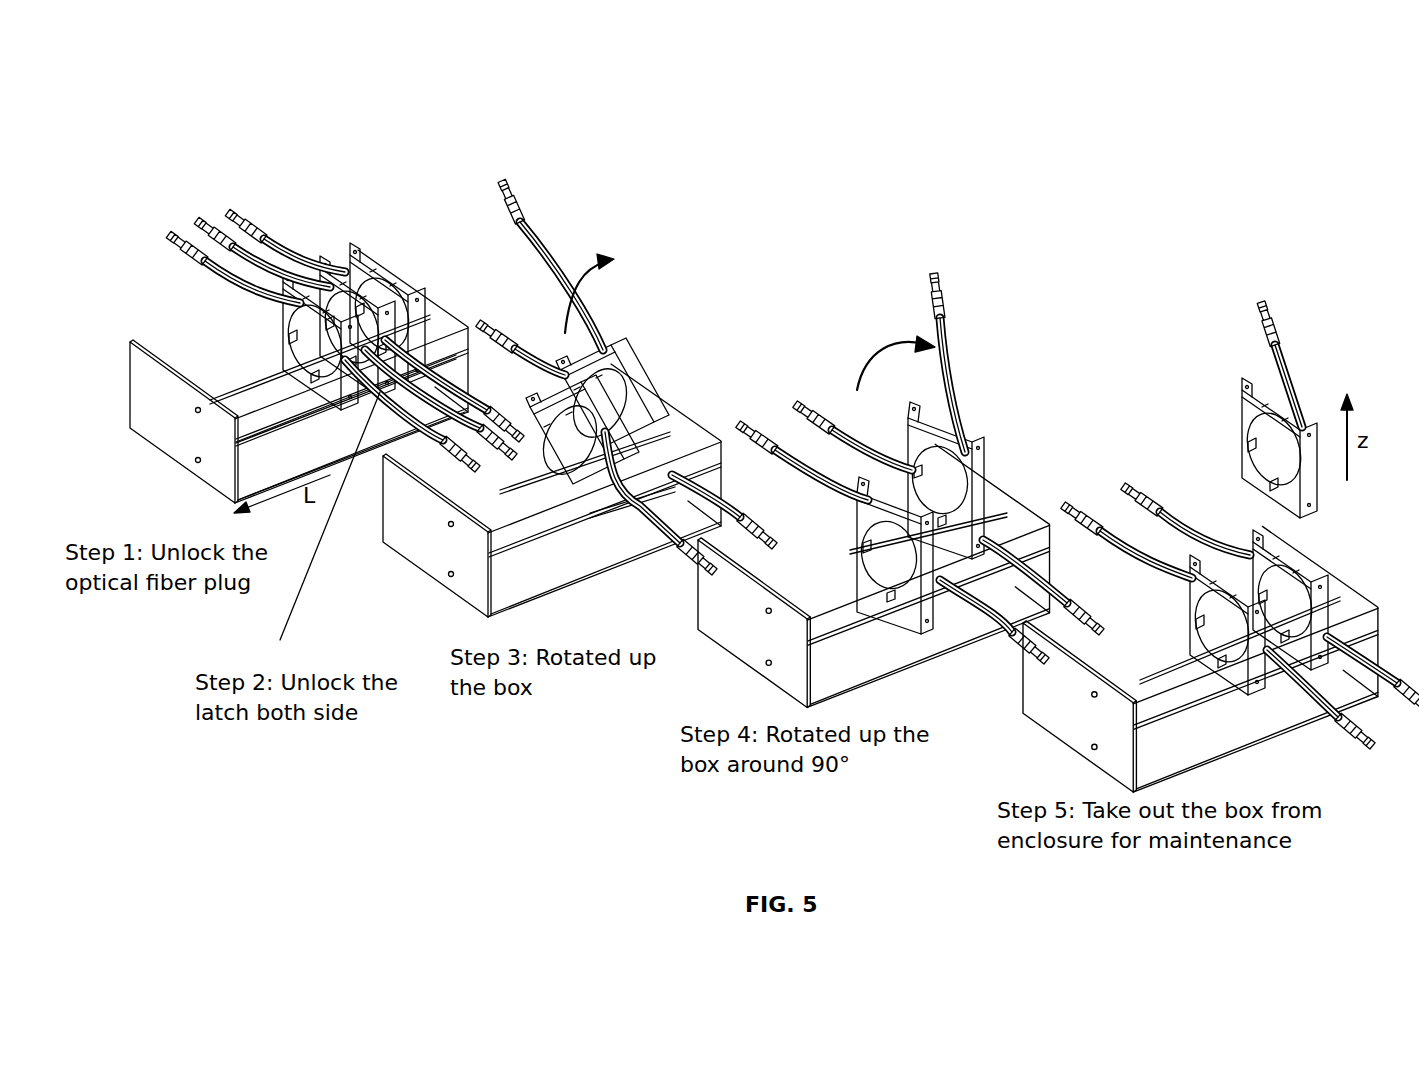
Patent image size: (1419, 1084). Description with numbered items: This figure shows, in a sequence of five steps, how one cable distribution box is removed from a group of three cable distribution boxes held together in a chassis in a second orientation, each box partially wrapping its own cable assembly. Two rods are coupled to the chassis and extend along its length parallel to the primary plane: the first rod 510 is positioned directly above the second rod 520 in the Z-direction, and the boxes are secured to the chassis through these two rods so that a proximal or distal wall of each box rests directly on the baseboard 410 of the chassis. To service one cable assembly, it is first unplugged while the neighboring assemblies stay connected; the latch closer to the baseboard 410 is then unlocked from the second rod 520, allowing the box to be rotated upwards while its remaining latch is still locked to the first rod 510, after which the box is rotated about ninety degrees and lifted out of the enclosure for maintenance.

The baseboard 410 is at (262, 467).
The first rod 510 is at (237, 392).
The second rod 520 is at (290, 413).